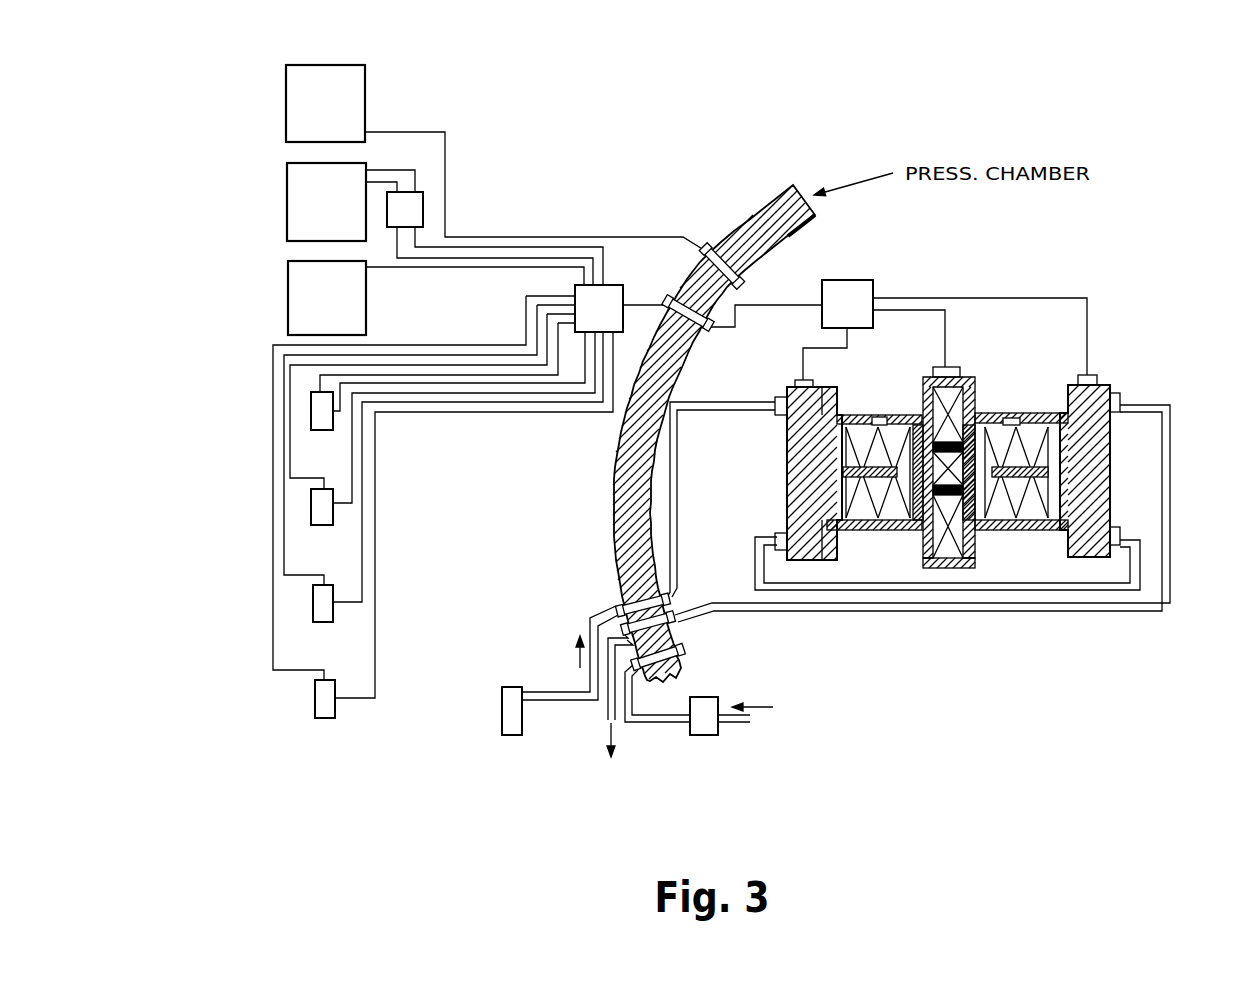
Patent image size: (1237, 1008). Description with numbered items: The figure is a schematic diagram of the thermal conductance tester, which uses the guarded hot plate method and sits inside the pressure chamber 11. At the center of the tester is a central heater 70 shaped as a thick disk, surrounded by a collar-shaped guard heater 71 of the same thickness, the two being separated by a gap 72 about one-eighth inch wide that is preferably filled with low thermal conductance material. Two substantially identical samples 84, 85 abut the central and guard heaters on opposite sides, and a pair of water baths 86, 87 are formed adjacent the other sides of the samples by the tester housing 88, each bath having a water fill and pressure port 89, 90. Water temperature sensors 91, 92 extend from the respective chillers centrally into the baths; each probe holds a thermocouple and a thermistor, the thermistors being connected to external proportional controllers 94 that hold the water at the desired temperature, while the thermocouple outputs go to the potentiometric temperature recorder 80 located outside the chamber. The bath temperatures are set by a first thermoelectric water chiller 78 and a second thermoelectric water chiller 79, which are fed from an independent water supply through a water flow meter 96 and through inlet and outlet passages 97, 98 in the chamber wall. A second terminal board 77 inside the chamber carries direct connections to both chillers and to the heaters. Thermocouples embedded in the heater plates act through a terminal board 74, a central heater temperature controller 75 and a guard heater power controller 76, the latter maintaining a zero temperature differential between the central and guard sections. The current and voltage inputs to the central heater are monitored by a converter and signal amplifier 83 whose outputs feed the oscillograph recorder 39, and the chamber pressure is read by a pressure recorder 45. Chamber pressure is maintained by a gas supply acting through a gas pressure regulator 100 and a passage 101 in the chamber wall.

The pressure chamber 11 is at (776, 212).
The light-beam oscillograph recorder 39 is at (305, 220).
The pressure recorder 45 is at (297, 115).
The central heater 70 is at (960, 380).
The guard heater 71 is at (945, 380).
The gap 72 is at (927, 533).
The terminal board 74 is at (598, 290).
The central heater temperature controller 75 is at (320, 414).
The guard heater power controller 76 is at (320, 510).
The second terminal board 77 is at (838, 295).
The first thermoelectric water chiller 78 is at (1108, 392).
The second thermoelectric water chiller 79 is at (790, 393).
The potentiometric temperature recorder 80 is at (310, 307).
The AC voltage to DC voltage converter and signal amplifier 83 is at (413, 210).
The sample 84 is at (922, 415).
The sample 85 is at (973, 413).
The water bath 86 is at (863, 453).
The water bath 87 is at (1035, 445).
The tester housing 88 is at (1025, 530).
The water fill and pressure port 89 is at (883, 420).
The water fill and pressure port 90 is at (1000, 418).
The water temperature sensor 91 is at (850, 477).
The water temperature sensor 92 is at (1050, 470).
The proportional controllers 94 is at (323, 702).
The water flow meter 96 is at (511, 727).
The inlet passage 97 is at (655, 594).
The outlet passage 98 is at (664, 612).
The gas pressure regulator 100 is at (710, 727).
The passage 101 is at (676, 656).